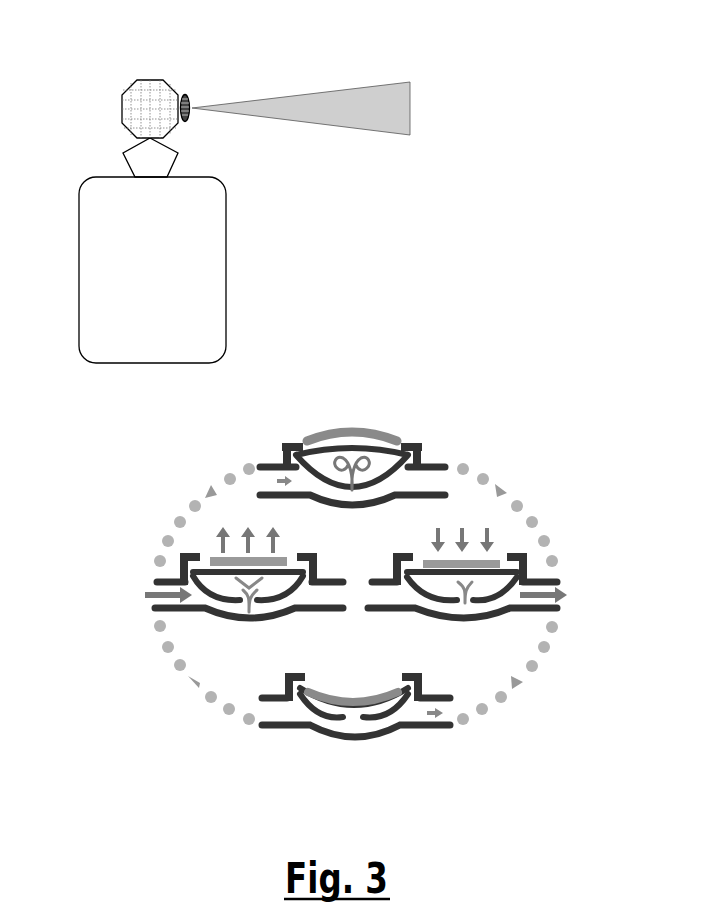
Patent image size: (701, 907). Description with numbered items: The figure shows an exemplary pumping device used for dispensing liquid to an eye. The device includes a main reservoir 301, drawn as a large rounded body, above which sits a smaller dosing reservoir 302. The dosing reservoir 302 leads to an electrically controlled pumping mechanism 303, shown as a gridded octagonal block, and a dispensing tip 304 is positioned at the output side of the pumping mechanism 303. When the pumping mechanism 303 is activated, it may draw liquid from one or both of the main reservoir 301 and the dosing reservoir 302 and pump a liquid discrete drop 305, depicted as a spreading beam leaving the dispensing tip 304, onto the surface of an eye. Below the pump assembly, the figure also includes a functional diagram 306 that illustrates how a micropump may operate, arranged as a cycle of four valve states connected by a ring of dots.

The main reservoir 301 is at (121, 271).
The dosing reservoir 302 is at (126, 157).
The electrically controlled pumping mechanism 303 is at (126, 108).
The dispensing tip 304 is at (188, 97).
The liquid discrete drop 305 is at (330, 111).
The functional diagram of micropump operation 306 is at (396, 584).